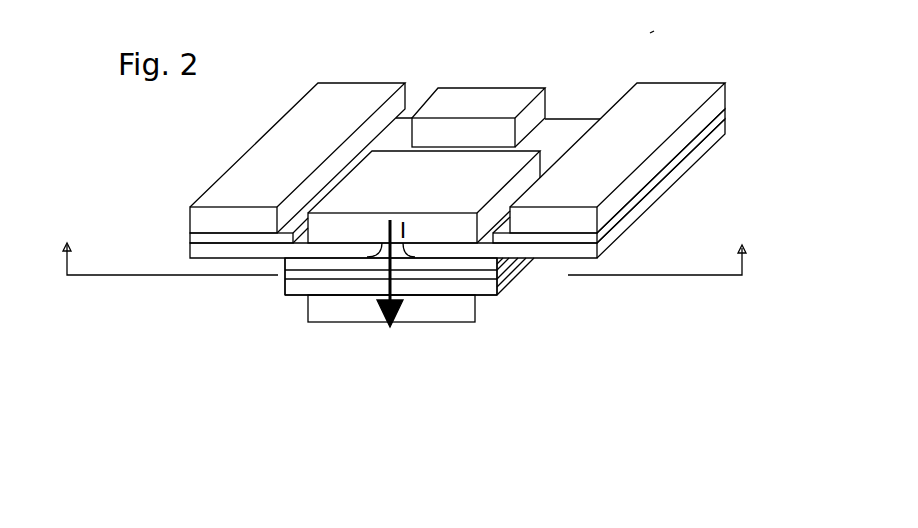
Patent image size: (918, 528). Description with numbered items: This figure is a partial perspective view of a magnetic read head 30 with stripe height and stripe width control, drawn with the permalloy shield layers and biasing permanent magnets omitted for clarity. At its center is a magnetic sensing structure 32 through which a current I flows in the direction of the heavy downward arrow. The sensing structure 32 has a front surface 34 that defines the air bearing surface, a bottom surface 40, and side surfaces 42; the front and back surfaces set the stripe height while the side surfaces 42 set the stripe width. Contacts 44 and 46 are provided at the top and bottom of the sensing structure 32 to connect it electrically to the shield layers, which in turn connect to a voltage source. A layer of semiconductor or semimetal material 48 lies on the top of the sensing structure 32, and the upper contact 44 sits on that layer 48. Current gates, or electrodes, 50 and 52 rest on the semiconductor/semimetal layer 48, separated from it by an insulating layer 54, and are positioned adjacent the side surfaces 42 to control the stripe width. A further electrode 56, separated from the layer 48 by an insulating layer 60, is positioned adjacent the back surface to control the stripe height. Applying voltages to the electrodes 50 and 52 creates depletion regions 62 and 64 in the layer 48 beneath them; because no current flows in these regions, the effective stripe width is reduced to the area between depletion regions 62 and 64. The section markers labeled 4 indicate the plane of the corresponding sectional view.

The magnetic read head 30 is at (652, 31).
The magnetic sensing structure 32 is at (262, 313).
The front surface 34 is at (311, 278).
The bottom surface 40 is at (485, 296).
The side surfaces 42 is at (283, 287).
The contact 44 is at (431, 194).
The contact 46 is at (347, 318).
The semiconductor/semimetal material layer 48 is at (690, 160).
The electrode 50 is at (351, 120).
The electrode 52 is at (632, 122).
The insulating layer 54 is at (192, 239).
The electrode 56 is at (478, 92).
The insulating layer 60 is at (550, 121).
The depletion region 62 is at (192, 253).
The depletion region 64 is at (567, 252).
The section line 4- 4 is at (402, 247).